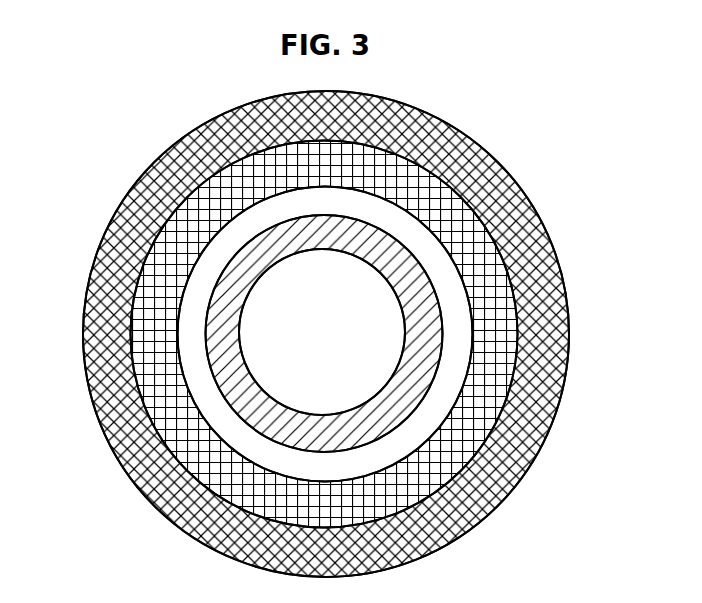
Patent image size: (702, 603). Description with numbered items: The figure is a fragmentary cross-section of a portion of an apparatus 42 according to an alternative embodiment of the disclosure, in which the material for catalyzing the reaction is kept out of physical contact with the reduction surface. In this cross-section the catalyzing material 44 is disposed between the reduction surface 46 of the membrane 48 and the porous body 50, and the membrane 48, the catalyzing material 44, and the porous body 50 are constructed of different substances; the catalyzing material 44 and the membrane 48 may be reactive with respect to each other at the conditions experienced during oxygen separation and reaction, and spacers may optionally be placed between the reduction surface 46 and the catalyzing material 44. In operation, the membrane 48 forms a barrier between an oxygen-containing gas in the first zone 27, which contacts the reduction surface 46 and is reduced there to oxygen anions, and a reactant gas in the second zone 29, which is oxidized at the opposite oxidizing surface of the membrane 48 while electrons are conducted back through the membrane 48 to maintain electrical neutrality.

The apparatus 42 is at (130, 130).
The catalyzing material 44 is at (523, 245).
The membrane 48 is at (498, 328).
The porous body 50 is at (512, 197).
The reduction surface 46 is at (372, 322).
The first zone 27 is at (309, 384).
The second zone 29 is at (75, 458).